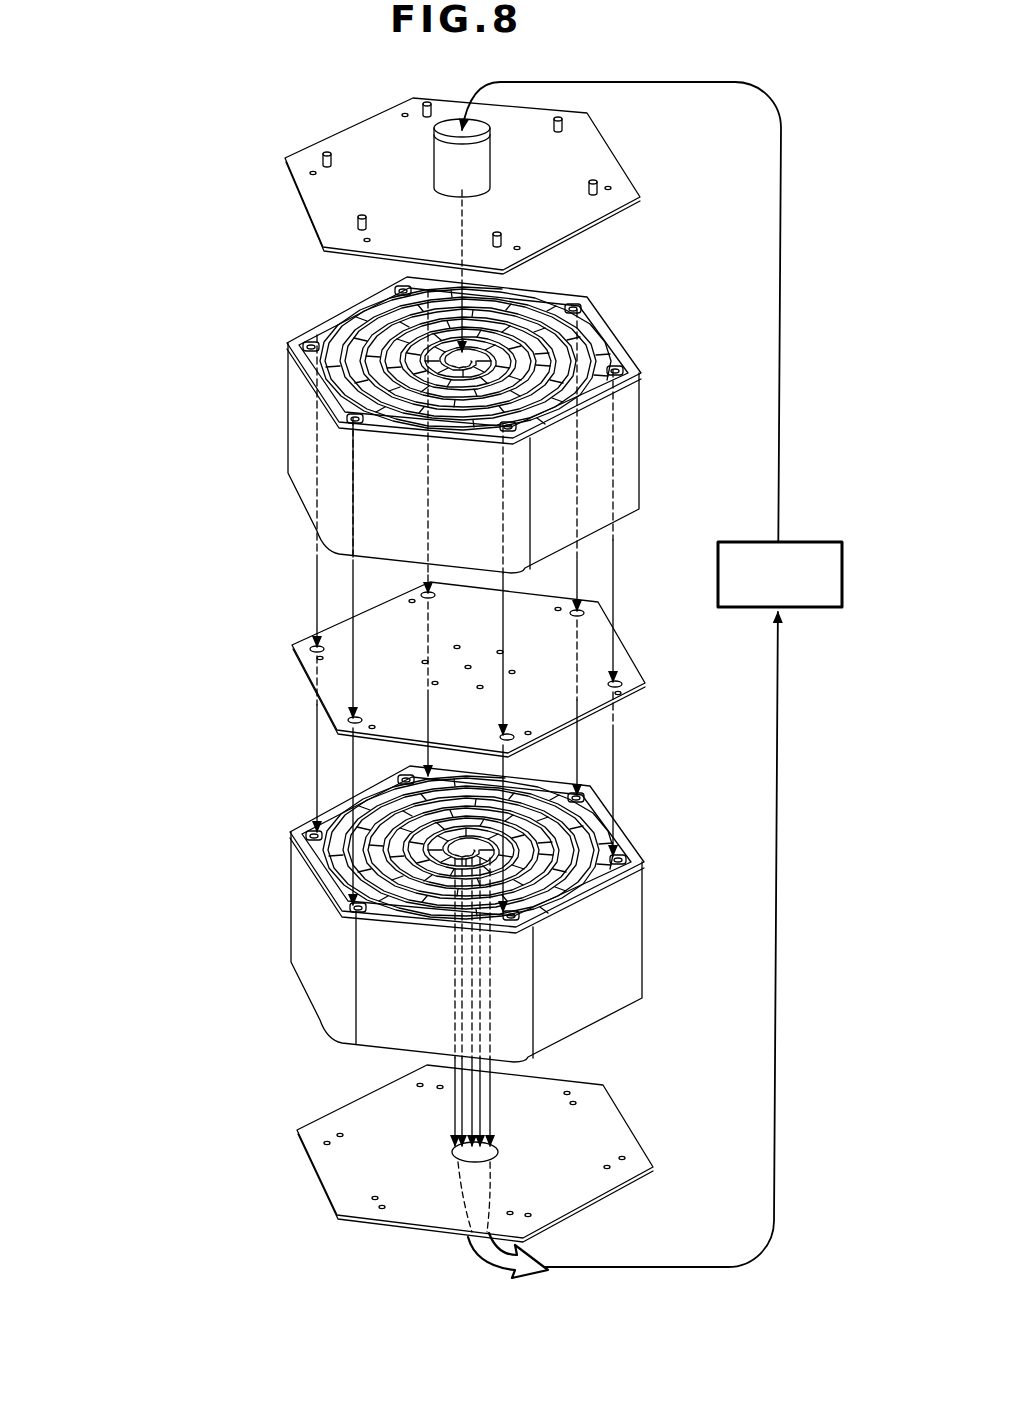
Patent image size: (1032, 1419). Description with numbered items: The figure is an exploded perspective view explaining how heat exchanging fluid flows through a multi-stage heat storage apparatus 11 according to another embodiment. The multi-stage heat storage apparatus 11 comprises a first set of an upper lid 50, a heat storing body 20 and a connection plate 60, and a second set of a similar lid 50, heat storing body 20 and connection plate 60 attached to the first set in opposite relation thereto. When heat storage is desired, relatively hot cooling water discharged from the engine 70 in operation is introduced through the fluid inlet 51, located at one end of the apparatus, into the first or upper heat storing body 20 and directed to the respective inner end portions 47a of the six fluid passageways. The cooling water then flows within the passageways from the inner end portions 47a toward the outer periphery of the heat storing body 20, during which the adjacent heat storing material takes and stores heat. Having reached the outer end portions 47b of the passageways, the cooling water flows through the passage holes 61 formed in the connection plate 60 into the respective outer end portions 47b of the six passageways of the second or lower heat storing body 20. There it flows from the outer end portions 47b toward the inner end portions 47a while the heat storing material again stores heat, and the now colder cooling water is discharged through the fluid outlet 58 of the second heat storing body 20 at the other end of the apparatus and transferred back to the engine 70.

The multi-stage heat storage apparatus 11 is at (172, 250).
The heat storing body 20 is at (193, 402).
The inner end portions 47a is at (355, 420).
The outer end portions 47b is at (403, 283).
The upper lid 50 is at (595, 150).
The fluid inlet 51 is at (455, 127).
The fluid outlet 58 is at (460, 1155).
The connection plate 60 is at (622, 652).
The passage holes 61 is at (420, 590).
The engine 70 is at (808, 556).